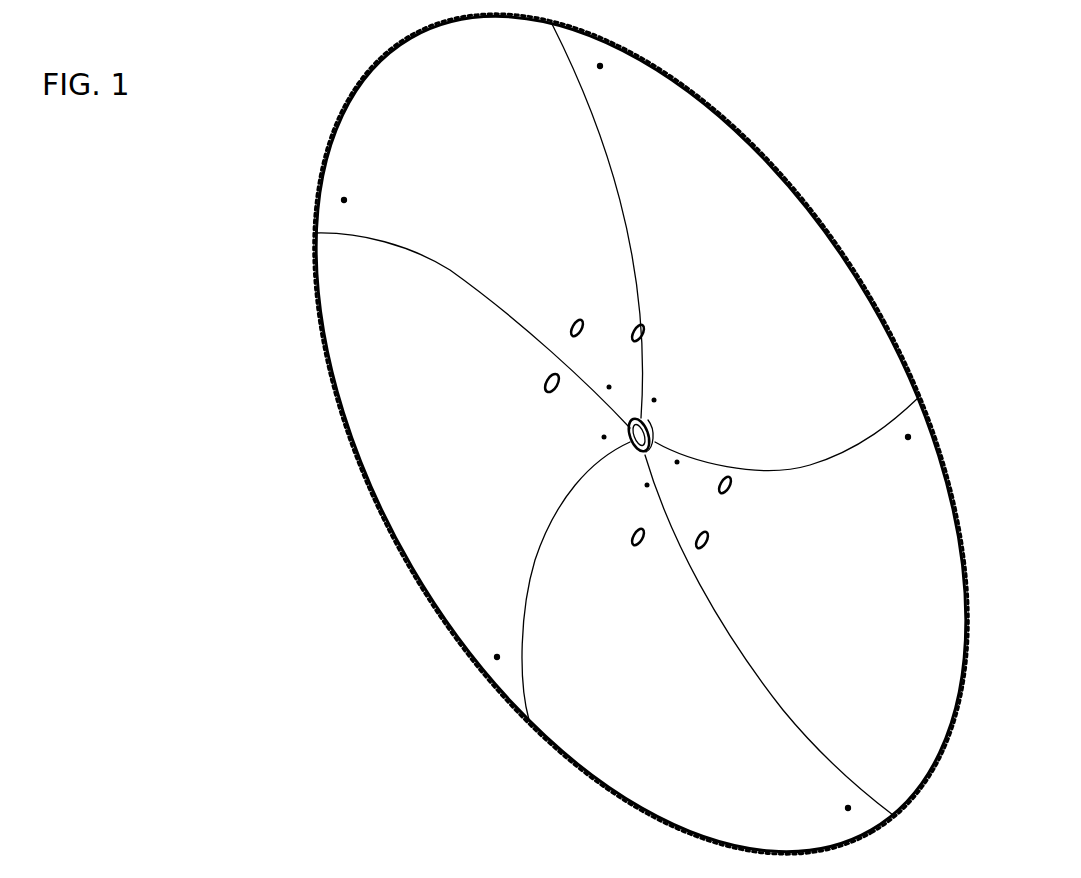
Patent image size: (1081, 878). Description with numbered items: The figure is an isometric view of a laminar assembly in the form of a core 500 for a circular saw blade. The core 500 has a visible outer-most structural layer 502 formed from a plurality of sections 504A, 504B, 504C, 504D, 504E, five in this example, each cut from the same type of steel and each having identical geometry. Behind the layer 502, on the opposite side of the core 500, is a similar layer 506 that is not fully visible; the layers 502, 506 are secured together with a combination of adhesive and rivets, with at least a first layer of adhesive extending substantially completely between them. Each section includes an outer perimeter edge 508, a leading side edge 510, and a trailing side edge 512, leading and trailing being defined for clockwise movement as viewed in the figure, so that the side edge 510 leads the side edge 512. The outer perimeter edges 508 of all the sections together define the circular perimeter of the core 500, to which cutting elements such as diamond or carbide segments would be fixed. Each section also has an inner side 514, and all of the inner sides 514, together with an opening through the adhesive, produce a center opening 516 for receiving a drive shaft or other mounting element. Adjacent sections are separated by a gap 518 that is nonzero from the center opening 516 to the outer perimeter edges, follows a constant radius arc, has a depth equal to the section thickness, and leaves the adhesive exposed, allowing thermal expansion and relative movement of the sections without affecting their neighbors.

The core 500 is at (272, 132).
The layer 502 is at (360, 322).
The section 504A is at (735, 172).
The section 504B is at (907, 493).
The section 504C is at (600, 700).
The section 504D is at (427, 480).
The section 504E is at (378, 110).
The layer 506 is at (909, 334).
The outer perimeter edge 508 is at (950, 617).
The leading side edge 510 is at (857, 787).
The trailing side edge 512 is at (887, 408).
The inner side 514 is at (648, 423).
The center opening 516 is at (616, 432).
The gap 518 is at (597, 108).